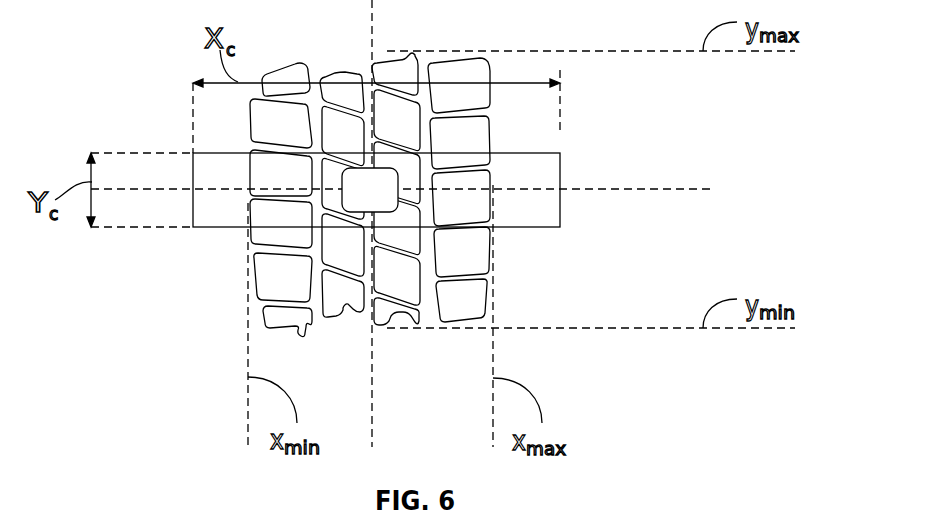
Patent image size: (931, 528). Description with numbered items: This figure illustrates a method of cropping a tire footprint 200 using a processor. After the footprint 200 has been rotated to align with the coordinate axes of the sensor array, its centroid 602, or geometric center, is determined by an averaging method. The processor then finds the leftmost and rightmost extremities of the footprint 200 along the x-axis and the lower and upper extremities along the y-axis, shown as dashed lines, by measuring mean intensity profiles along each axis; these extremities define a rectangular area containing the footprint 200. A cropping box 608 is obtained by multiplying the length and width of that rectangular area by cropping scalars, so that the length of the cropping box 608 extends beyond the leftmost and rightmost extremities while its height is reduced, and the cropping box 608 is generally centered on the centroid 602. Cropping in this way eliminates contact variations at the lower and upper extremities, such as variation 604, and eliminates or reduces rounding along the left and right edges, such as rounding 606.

The footprint 200 is at (338, 72).
The centroid 602 is at (398, 178).
The variation 604 is at (354, 330).
The rounding 606 is at (242, 282).
The cropping box 608 is at (560, 165).